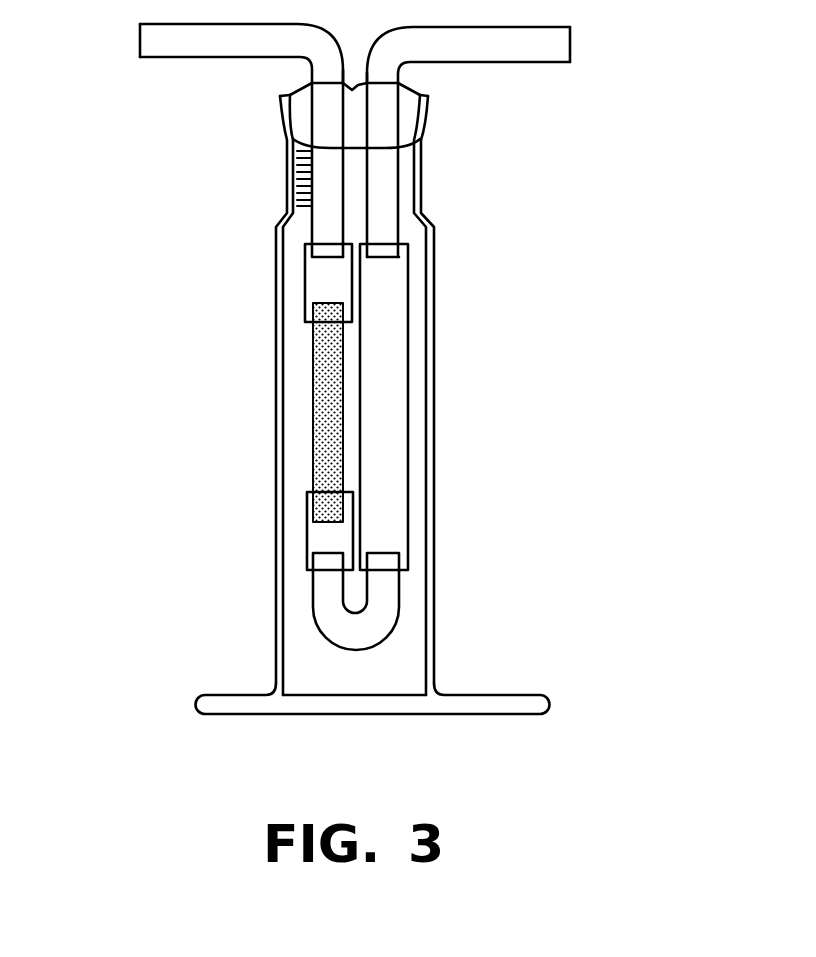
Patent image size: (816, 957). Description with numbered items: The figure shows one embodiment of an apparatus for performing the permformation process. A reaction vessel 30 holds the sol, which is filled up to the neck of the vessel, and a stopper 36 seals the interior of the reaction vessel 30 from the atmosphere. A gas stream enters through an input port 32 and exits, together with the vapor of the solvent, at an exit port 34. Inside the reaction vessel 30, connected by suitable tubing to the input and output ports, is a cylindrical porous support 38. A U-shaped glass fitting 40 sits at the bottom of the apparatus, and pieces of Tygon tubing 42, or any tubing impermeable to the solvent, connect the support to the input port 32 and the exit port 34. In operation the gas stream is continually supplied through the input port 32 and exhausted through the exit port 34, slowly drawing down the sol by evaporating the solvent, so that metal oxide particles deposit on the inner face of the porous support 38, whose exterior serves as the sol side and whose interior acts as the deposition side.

The reaction vessel 30 is at (262, 193).
The input port 32 is at (170, 48).
The exit port 34 is at (520, 44).
The stopper 36 is at (452, 128).
The cylindrical porous support 38 is at (290, 434).
The U-shaped glass fitting 40 is at (330, 612).
The Tygon tubing 42 is at (323, 282).